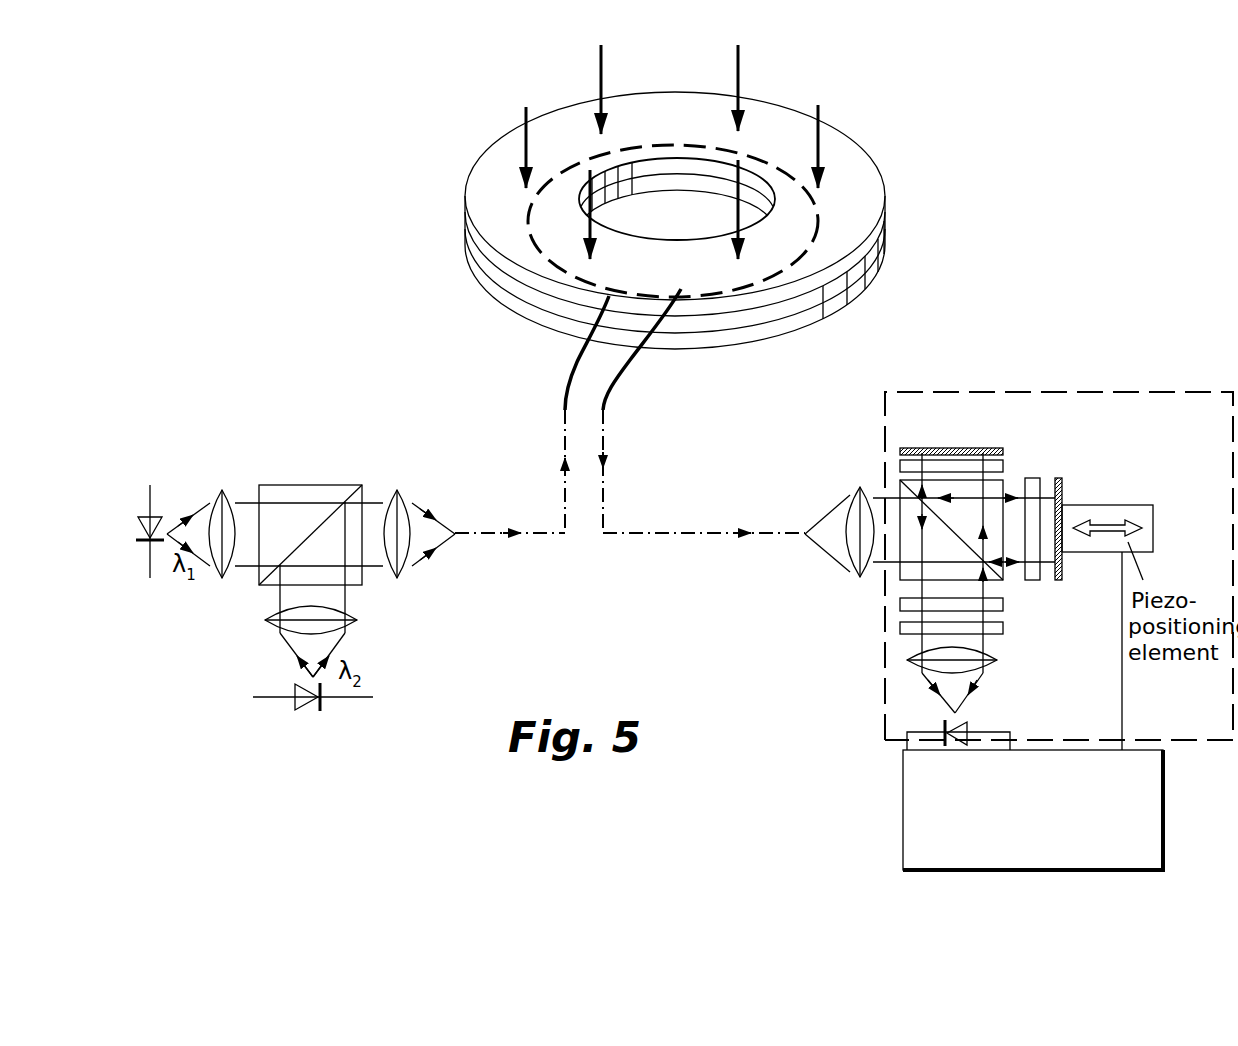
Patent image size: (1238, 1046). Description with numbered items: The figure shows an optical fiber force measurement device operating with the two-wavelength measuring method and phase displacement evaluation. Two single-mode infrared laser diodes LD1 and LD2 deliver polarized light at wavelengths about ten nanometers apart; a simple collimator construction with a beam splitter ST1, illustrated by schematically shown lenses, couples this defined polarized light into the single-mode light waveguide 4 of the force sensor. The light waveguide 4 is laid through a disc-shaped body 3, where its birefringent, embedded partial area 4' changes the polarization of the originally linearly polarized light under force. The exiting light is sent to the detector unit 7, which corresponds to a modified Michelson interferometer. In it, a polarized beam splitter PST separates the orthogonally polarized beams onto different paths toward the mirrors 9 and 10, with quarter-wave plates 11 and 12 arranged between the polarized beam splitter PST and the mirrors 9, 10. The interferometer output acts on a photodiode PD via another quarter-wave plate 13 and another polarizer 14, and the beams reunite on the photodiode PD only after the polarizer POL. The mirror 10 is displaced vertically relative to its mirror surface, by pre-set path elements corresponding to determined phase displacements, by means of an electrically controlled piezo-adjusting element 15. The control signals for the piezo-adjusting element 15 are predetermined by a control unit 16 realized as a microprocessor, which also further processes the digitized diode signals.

The disc / rotating body 3 is at (892, 218).
The birefringent embedded partial area 4' is at (617, 221).
The light waveguide (LWL) 4 is at (630, 411).
The detector unit 7 is at (1193, 412).
The mirror 9 is at (973, 448).
The mirror 10 is at (1060, 482).
The λ/4 plate 11 is at (1000, 466).
The λ/4 plate 12 is at (1033, 484).
The λ/4 plate 13 is at (1003, 605).
The polarizer 14 is at (1003, 628).
The piezo-adjusting element 15 is at (1145, 515).
The control unit (microprocessor) 16 is at (1150, 800).
The laser diode LD1 is at (143, 530).
The laser diode LD2 is at (301, 704).
The beam splitter ST1 is at (297, 492).
The polarized beam splitter PST is at (910, 571).
The polarizer POL is at (903, 630).
The photodiode PD is at (962, 721).